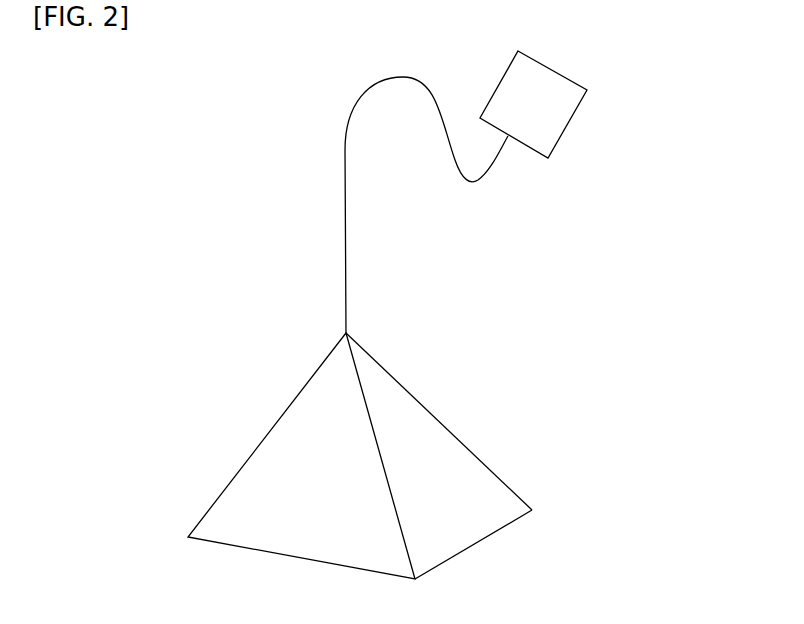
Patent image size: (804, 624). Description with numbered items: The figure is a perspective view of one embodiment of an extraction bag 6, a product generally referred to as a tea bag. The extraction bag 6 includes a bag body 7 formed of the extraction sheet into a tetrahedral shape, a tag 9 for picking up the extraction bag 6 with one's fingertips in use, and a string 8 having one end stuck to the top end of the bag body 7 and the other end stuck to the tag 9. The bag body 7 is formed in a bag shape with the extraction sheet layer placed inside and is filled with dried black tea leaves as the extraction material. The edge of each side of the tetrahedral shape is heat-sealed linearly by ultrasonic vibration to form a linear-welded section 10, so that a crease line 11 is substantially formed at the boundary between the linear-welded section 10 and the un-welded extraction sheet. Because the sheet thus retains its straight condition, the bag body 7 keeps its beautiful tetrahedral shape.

The extraction bag 6 is at (275, 352).
The bag body 7 is at (437, 445).
The string 8 is at (345, 193).
The tag 9 is at (553, 119).
The linear-welded section 10 is at (480, 460).
The crease line 11 is at (475, 543).